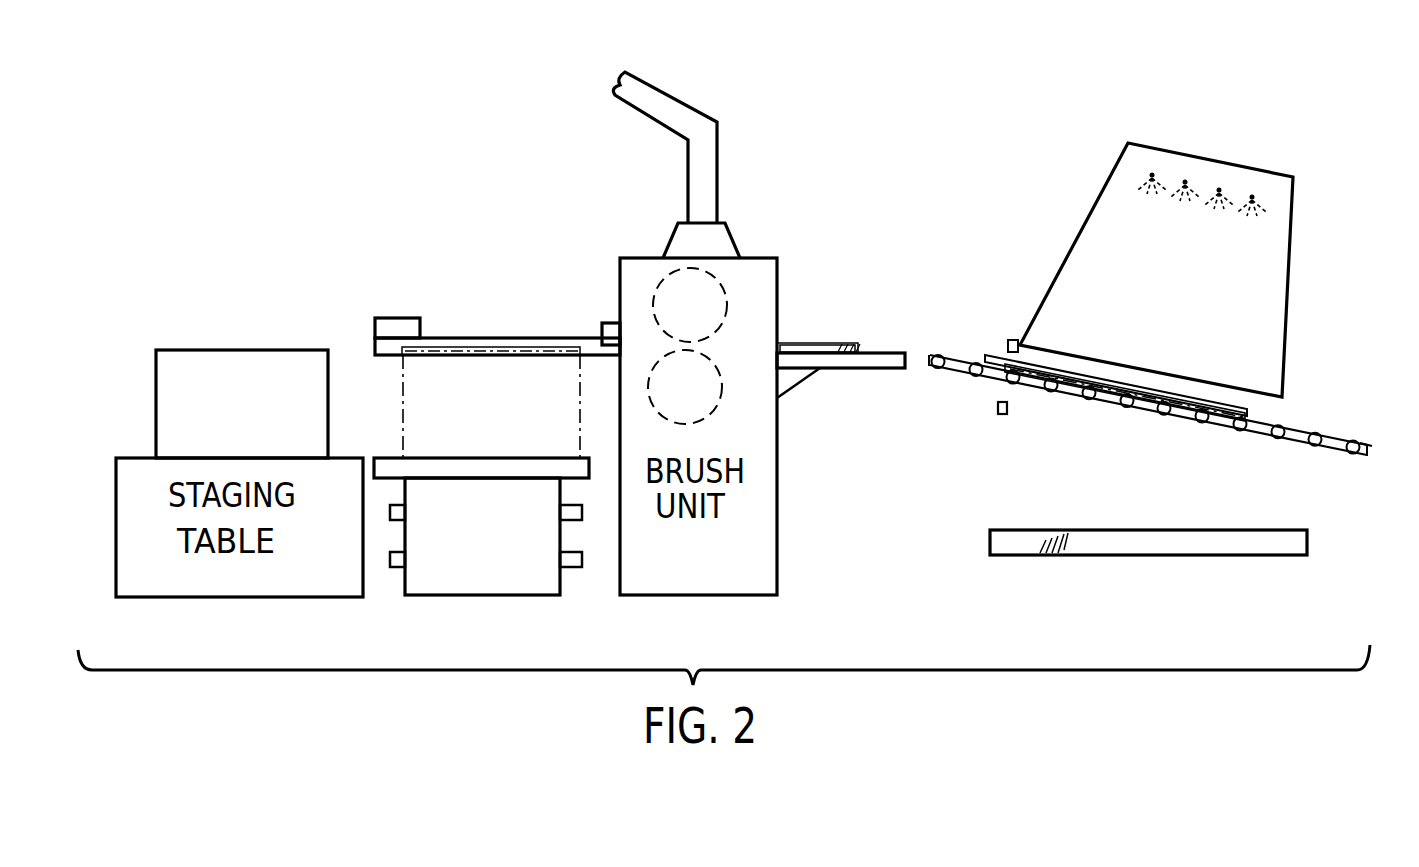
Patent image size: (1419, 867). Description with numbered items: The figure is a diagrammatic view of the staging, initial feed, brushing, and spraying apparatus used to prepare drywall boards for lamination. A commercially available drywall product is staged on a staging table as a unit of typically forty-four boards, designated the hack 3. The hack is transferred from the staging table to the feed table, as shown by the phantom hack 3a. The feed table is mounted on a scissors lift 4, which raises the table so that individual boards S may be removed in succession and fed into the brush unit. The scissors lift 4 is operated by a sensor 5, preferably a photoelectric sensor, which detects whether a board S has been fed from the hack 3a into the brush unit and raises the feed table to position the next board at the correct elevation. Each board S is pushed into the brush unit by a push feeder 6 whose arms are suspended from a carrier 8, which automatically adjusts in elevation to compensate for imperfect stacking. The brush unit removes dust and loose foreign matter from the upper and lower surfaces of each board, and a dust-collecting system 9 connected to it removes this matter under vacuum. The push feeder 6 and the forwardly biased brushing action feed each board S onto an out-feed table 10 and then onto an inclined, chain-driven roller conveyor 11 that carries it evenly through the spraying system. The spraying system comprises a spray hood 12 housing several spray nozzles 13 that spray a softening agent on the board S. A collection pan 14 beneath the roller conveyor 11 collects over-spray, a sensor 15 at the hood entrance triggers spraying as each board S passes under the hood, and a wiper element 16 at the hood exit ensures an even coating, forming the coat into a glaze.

The hack 3 is at (197, 355).
The phantom hack 3a is at (428, 388).
The scissors lift 4 is at (592, 532).
The sensor 5 is at (602, 325).
The push feeder 6 is at (396, 298).
The carrier 8 is at (500, 338).
The dust-collecting system 9 is at (718, 177).
The out-feed table 10 is at (882, 352).
The roller conveyor 11 is at (953, 390).
The spray hood 12 is at (1295, 285).
The spray nozzles 13 is at (1272, 190).
The collection pan 14 is at (1215, 545).
The sensor 15 is at (1023, 415).
The wiper element 16 is at (1318, 400).
The board S is at (827, 343).